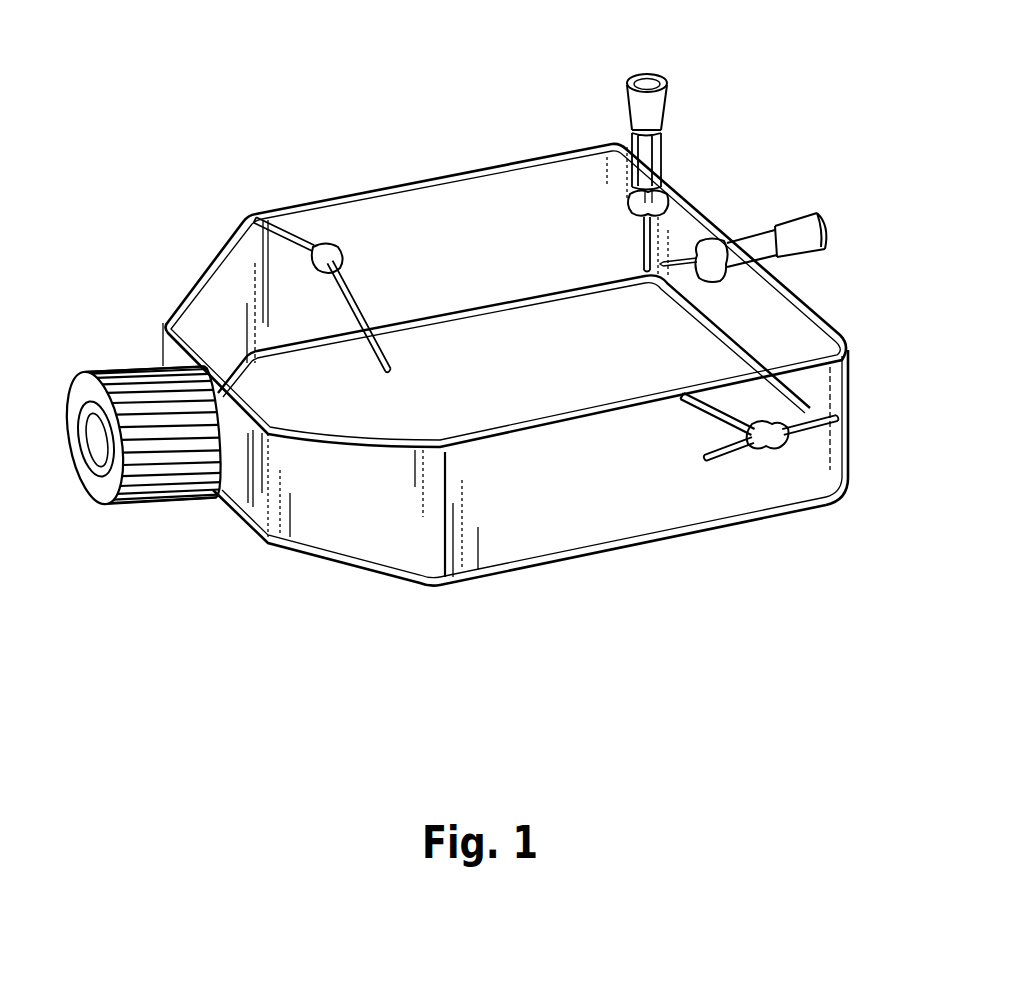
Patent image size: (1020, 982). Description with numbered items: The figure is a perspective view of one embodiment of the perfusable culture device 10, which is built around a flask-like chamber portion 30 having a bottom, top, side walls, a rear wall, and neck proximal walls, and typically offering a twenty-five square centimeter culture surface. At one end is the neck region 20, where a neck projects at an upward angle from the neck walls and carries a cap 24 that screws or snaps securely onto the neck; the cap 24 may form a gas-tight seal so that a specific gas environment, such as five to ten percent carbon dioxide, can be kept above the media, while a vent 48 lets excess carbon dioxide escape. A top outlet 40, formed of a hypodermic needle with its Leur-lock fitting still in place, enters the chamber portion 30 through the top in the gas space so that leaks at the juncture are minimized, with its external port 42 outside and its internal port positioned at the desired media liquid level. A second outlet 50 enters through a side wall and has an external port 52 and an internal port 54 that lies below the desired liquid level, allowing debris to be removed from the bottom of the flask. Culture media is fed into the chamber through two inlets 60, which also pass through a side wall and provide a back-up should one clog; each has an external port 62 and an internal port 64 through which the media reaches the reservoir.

The perfusable culture device 10 is at (368, 88).
The neck region 20 is at (208, 527).
The cap 24 is at (97, 487).
The chamber portion 30 is at (561, 578).
The top outlet 40 is at (668, 193).
The external port 42 is at (664, 82).
The vent 48 is at (793, 214).
The outlet 50 is at (317, 246).
The external port 52 is at (248, 219).
The internal port 54 is at (391, 369).
The inlets 60 is at (813, 437).
The external port 62 is at (839, 419).
The internal port 64 is at (687, 399).